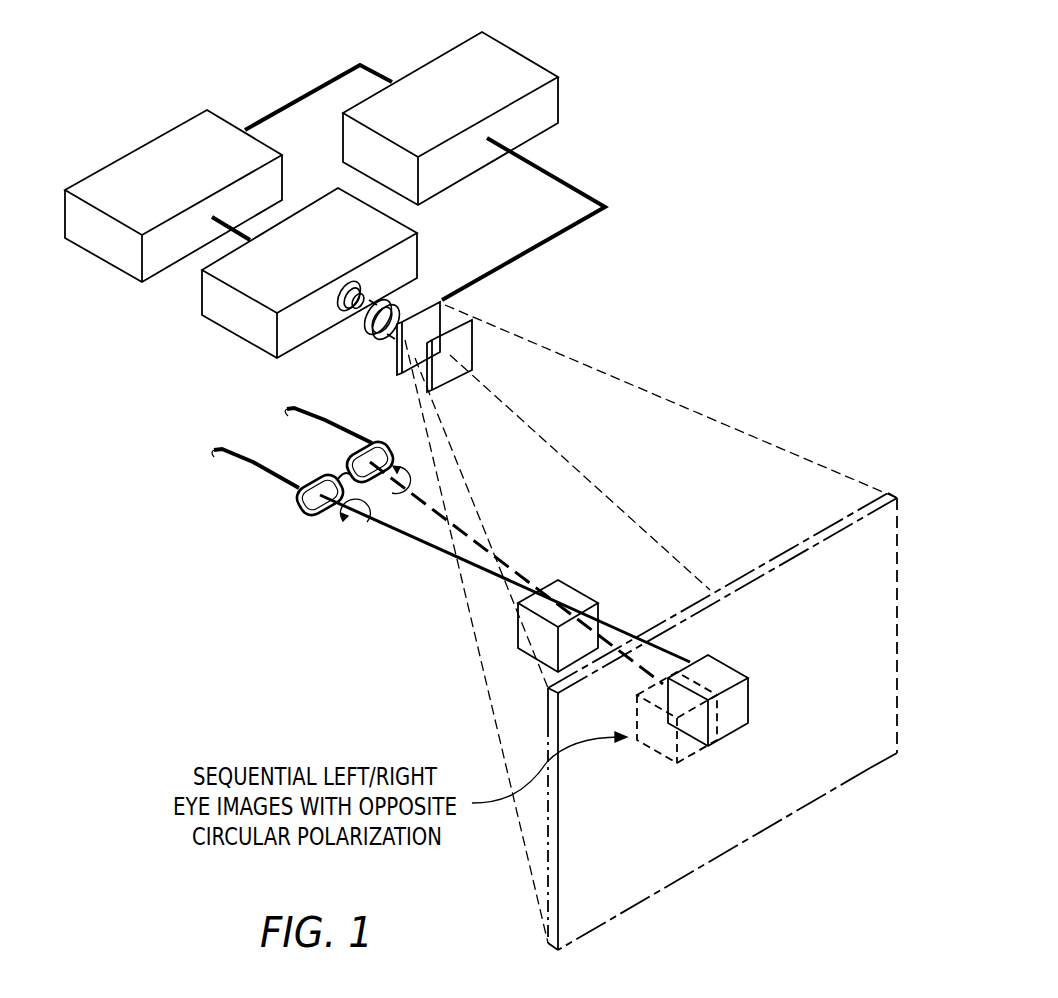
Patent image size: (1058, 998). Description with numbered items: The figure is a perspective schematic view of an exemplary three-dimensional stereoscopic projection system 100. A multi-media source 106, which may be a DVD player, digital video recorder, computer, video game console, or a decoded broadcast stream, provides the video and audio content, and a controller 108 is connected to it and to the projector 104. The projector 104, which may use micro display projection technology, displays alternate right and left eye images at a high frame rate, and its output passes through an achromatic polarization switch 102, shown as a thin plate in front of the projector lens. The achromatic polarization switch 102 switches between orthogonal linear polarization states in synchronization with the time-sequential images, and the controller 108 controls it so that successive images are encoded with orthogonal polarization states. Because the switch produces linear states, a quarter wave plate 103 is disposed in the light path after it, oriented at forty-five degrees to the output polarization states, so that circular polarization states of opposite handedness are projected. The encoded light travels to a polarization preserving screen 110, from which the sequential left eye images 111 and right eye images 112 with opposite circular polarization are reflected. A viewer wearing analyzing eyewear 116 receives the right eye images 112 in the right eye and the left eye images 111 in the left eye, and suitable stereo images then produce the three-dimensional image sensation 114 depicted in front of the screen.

The 3-D stereoscopic projection system 100 is at (776, 146).
The achromatic polarization switch 102 is at (422, 297).
The quarter wave plate 103 is at (477, 343).
The projector 104 is at (240, 340).
The multi-media source 106 is at (103, 262).
The controller 108 is at (522, 50).
The polarization preserving screen 110 is at (712, 840).
The left eye images 111 is at (658, 755).
The right eye images 112 is at (733, 733).
The 3D image sensation 114 is at (570, 580).
The analyzing eyewear 116 is at (272, 482).